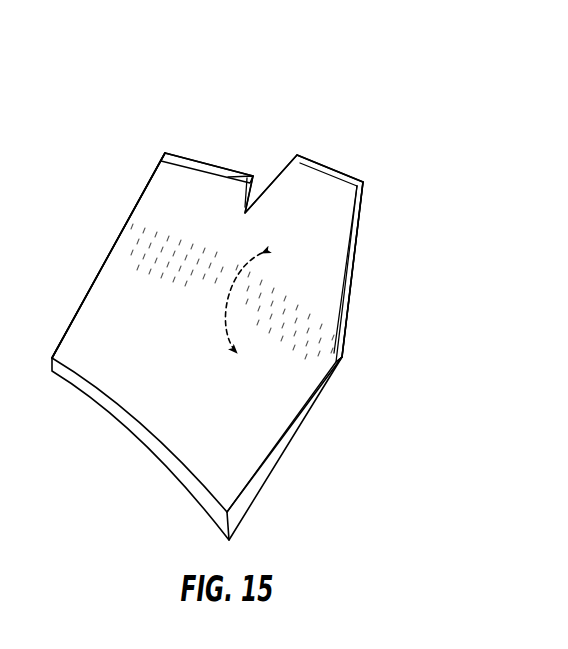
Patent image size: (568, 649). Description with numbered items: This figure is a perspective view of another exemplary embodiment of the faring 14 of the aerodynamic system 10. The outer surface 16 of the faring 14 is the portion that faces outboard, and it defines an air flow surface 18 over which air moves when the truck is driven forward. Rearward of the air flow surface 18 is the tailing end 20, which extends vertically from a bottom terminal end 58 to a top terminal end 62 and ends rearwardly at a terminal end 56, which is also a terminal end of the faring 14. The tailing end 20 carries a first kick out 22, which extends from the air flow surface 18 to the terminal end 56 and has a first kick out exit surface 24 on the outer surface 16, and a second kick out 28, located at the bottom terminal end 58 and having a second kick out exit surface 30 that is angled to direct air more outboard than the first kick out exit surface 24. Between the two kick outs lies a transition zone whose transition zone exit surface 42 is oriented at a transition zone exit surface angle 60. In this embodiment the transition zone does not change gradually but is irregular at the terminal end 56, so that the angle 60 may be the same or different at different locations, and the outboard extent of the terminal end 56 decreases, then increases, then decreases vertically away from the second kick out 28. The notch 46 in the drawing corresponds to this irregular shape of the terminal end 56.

The shingle / roofing panel 10 is at (347, 75).
The faring 14 is at (109, 91).
The outer surface 16 is at (91, 336).
The air flow surface 18 is at (244, 443).
The tailing end 20 is at (132, 230).
The first kick out 22 is at (162, 190).
The first kick out exit surface 24 is at (159, 212).
The second kick out 28 is at (333, 248).
The second kick out exit surface 30 is at (327, 267).
The transition zone exit surface 42 is at (236, 239).
The notch 46 is at (242, 177).
The terminal end 56 is at (308, 163).
The bottom terminal end 58 is at (350, 310).
The transition zone exit surface angle 60 is at (220, 298).
The top terminal end 62 is at (153, 186).